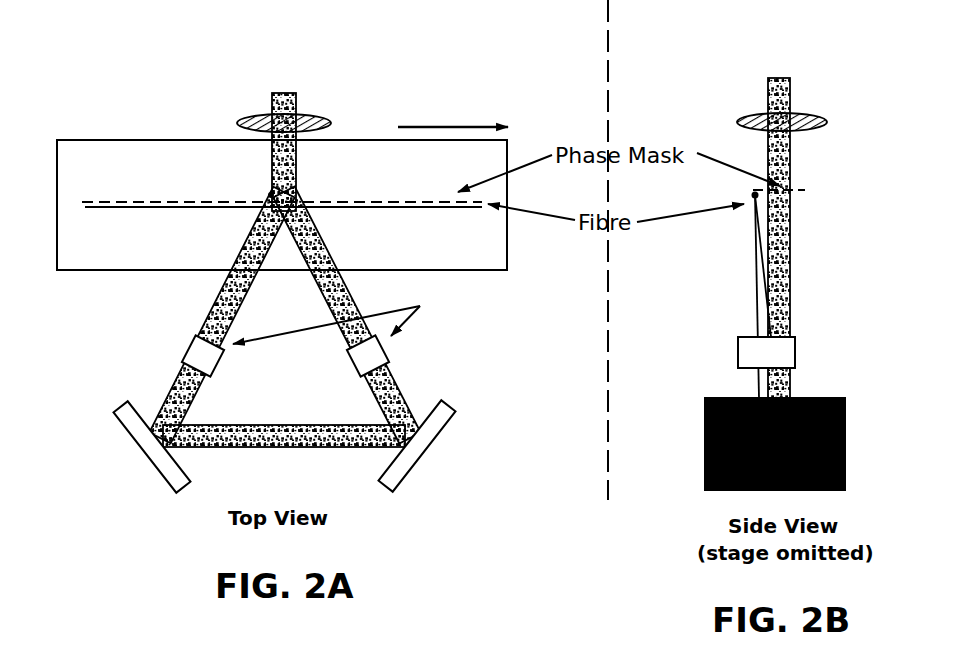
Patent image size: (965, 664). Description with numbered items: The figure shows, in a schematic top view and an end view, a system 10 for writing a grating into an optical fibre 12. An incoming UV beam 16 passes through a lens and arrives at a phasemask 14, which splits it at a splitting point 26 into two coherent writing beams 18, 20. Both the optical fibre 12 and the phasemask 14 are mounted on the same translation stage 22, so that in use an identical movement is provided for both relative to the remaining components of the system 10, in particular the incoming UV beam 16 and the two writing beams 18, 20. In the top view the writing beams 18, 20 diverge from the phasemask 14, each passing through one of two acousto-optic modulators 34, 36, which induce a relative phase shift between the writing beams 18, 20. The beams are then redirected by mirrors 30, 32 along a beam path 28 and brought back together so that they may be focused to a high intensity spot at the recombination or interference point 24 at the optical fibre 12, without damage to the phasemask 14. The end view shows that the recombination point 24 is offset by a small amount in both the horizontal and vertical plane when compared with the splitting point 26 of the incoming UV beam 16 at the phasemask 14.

In FIG. 2A, the system 10 is at (336, 319).
In FIG. 2B, the system 10 is at (740, 342).
In FIG. 2A, the optical fibre 12 is at (123, 212).
In FIG. 2B, the optical fibre 12 is at (755, 195).
In FIG. 2A, the phasemask 14 is at (380, 197).
In FIG. 2A, the incoming UV beam 16 is at (272, 100).
In FIG. 2A, the writing beam 18 is at (347, 288).
In FIG. 2A, the writing beam 20 is at (224, 288).
In FIG. 2A, the translation stage 22 is at (57, 190).
In FIG. 2A, the recombination point 24 is at (270, 194).
In FIG. 2B, the recombination point 24 is at (748, 211).
In FIG. 2B, the splitting point 26 is at (786, 211).
In FIG. 2A, the recombined beam path 28 is at (230, 464).
In FIG. 2A, the first mirror 30 is at (145, 448).
In FIG. 2A, the second mirror 32 is at (415, 467).
In FIG. 2A, the acousto-optic modulator 34 is at (390, 360).
In FIG. 2A, the acousto-optic modulator 36 is at (186, 353).